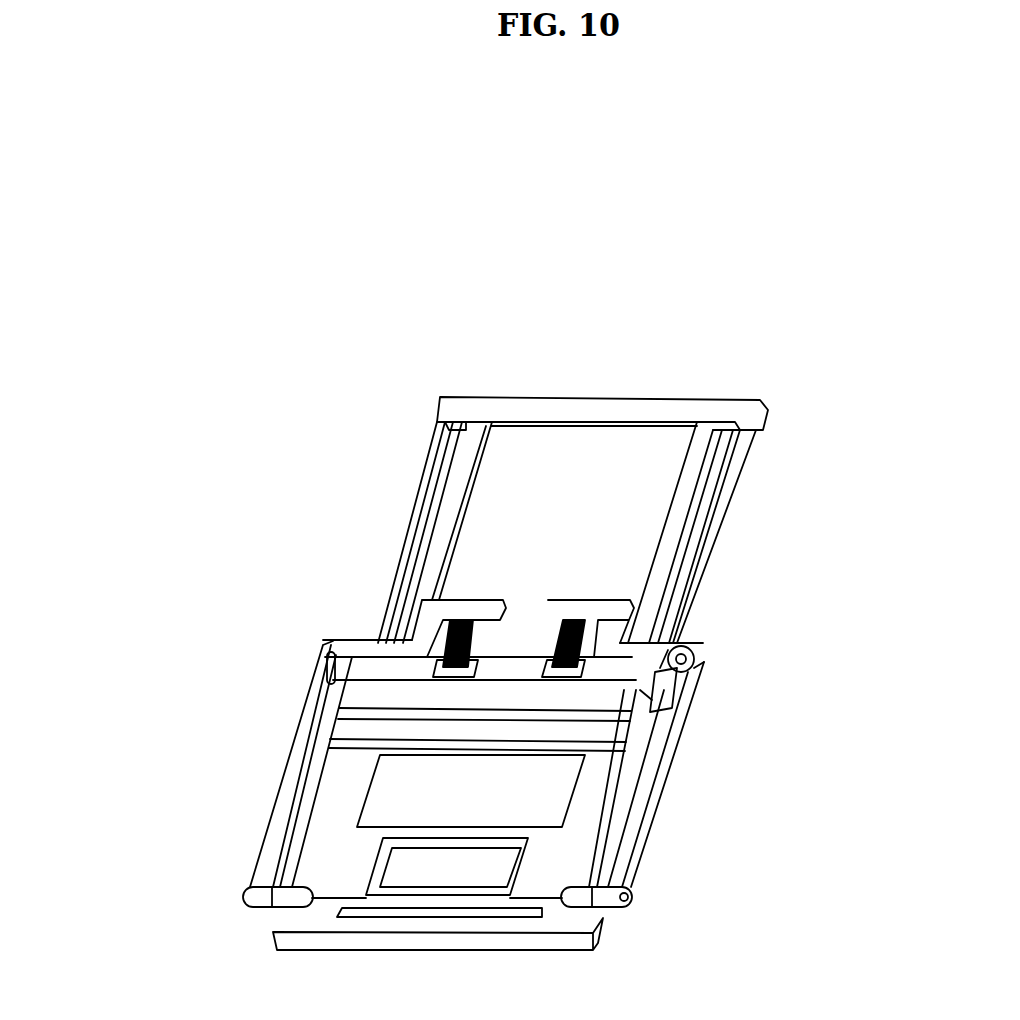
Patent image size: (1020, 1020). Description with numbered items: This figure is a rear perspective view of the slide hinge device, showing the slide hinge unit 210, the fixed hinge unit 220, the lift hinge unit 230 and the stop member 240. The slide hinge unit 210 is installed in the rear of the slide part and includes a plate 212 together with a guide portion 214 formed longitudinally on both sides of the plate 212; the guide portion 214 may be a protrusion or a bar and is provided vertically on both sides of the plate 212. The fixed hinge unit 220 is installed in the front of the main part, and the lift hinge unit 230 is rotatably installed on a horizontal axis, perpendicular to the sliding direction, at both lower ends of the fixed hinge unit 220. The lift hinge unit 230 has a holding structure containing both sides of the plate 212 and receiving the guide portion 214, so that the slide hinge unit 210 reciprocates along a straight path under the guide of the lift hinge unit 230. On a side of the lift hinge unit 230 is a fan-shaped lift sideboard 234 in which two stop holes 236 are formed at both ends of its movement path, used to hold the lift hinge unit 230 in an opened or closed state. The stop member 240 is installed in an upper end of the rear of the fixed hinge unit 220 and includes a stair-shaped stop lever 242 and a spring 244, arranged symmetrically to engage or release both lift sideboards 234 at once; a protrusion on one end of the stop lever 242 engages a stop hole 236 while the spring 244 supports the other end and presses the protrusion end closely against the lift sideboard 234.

The slide hinge unit 210 is at (572, 461).
The plate 212 is at (500, 488).
The guide portion 214 is at (723, 500).
The fixed hinge unit 220 is at (567, 780).
The lift hinge unit 230 is at (427, 787).
The lift sideboard 234 is at (627, 772).
The stop hole 236 is at (660, 668).
The stop member 240 is at (765, 665).
The stop lever 242 is at (607, 600).
The spring 244 is at (580, 622).